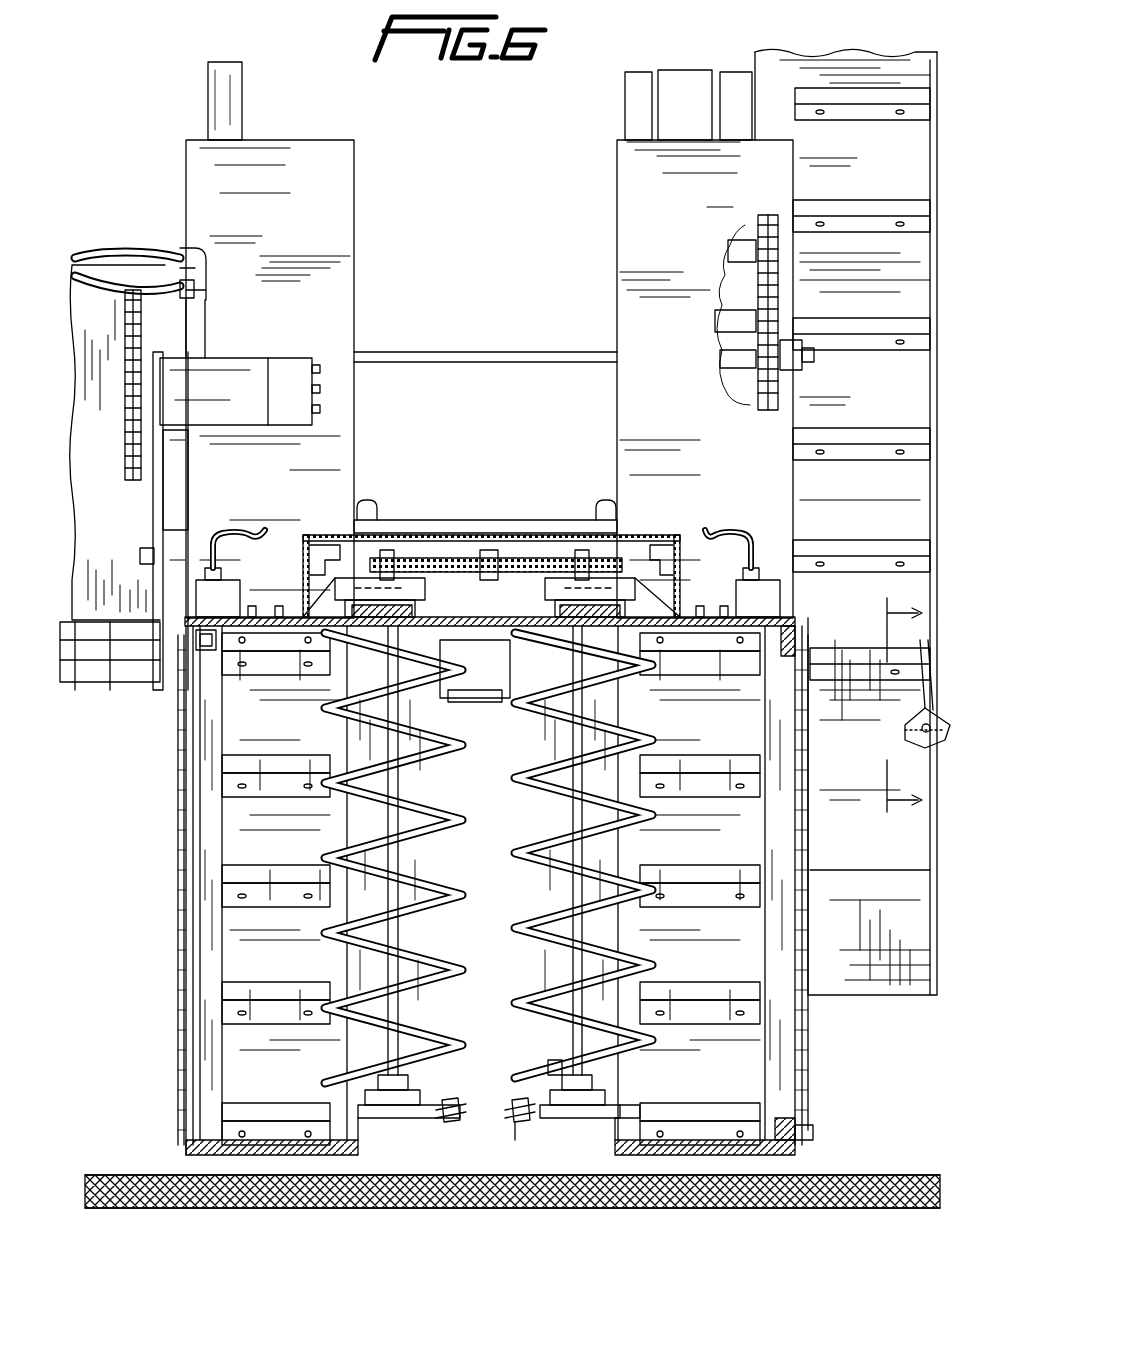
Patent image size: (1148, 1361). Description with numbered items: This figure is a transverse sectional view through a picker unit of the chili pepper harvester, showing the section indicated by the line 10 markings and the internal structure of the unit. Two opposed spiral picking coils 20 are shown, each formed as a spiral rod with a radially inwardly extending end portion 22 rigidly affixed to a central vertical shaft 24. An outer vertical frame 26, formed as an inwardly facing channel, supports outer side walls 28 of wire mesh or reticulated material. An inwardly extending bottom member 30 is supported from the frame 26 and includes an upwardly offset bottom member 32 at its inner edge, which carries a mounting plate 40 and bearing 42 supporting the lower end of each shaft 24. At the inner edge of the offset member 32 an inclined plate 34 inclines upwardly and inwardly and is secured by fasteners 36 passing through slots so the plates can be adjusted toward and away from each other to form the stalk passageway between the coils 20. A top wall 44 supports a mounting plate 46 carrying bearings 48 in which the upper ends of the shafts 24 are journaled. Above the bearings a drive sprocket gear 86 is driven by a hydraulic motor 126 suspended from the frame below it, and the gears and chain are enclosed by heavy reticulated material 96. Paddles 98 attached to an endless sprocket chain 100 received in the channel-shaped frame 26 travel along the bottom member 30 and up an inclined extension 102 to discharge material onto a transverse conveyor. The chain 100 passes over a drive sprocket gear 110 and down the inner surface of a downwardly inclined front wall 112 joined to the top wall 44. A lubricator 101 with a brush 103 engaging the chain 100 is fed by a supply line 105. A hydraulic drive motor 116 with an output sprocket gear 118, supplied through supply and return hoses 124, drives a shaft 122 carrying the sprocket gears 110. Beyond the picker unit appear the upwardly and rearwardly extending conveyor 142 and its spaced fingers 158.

The section line 10 is at (904, 708).
The spiral picking coil 20 is at (520, 858).
The radially inwardly extending end portion 22 is at (375, 1055).
The central vertical shaft 24 is at (405, 1000).
The outer vertical frame 26 is at (775, 1078).
The outer side wall 28 is at (180, 895).
The bottom member 30 is at (322, 1158).
The upwardly offset bottom member 32 is at (560, 1158).
The inclined plate 34 is at (512, 1120).
The fastener 36 is at (520, 1105).
The mounting plate 40 is at (615, 1102).
The bearing 42 is at (548, 1066).
The top wall 44 is at (678, 615).
The mounting plate 46 is at (558, 608).
The bearing 48 is at (400, 578).
The drive sprocket gear 86 is at (442, 558).
The reticulated material 96 is at (520, 536).
The paddle 98 is at (728, 335).
The endless sprocket chain 100 is at (813, 1130).
The lubricator 101 is at (235, 590).
The inclined extension 102 is at (732, 270).
The brush 103 is at (790, 626).
The supply line 105 is at (740, 538).
The drive sprocket gear 110 is at (750, 388).
The downwardly inclined front wall 112 is at (322, 150).
The hydraulic drive motor 116 is at (247, 372).
The output sprocket gear 118 is at (128, 485).
The shaft 122 is at (478, 350).
The supply and return hoses 124 is at (138, 250).
The hydraulic motor 126 is at (480, 692).
The upwardly and rearwardly extending conveyor 142 is at (905, 992).
The spaced fingers 158 is at (915, 700).